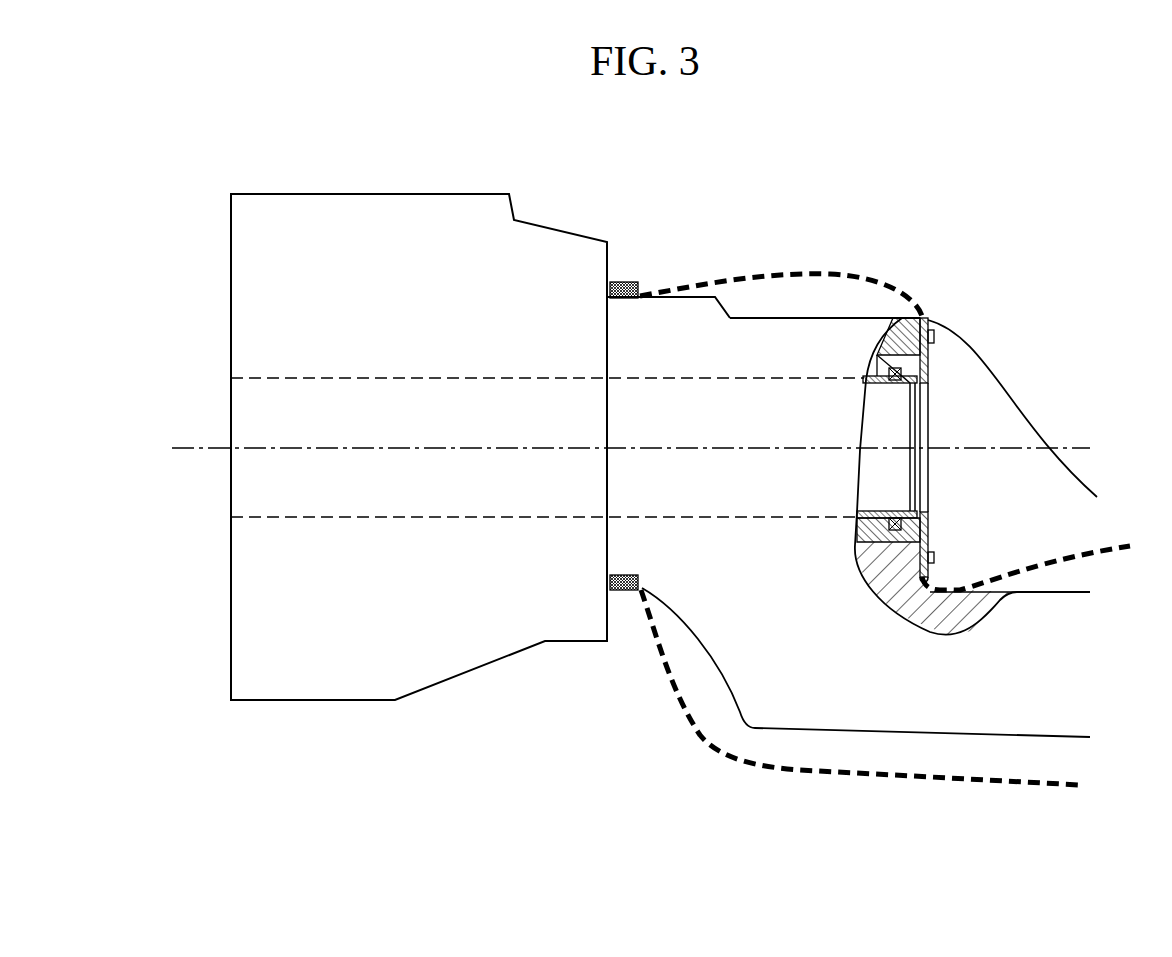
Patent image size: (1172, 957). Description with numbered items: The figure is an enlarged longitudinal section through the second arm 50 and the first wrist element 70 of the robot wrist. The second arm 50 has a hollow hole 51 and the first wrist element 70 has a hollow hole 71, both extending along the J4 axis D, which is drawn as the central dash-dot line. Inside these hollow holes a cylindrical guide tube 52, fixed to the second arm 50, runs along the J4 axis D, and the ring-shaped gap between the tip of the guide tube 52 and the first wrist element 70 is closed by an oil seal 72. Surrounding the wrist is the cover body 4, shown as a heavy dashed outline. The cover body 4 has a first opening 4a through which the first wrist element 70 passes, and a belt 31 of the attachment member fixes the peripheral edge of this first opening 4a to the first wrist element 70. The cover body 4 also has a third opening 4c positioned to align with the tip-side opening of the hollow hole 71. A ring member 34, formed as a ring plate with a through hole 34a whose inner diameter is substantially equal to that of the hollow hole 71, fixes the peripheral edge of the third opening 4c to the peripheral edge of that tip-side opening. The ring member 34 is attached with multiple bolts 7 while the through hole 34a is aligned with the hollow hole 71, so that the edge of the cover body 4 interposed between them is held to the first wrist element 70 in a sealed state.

The cover body 4 is at (972, 787).
The first opening 4a is at (650, 295).
The third opening 4c is at (921, 318).
The bolts 7 is at (935, 560).
The belt 31 is at (620, 592).
The ring member 34 is at (930, 365).
The through hole 34a is at (928, 397).
The second arm 50 is at (300, 722).
The hollow hole 51 is at (430, 378).
The guide tube 52 is at (883, 512).
The first wrist element 70 is at (843, 752).
The hollow hole 71 is at (807, 380).
The oil seal 72 is at (895, 532).
The J4 axis D is at (197, 447).